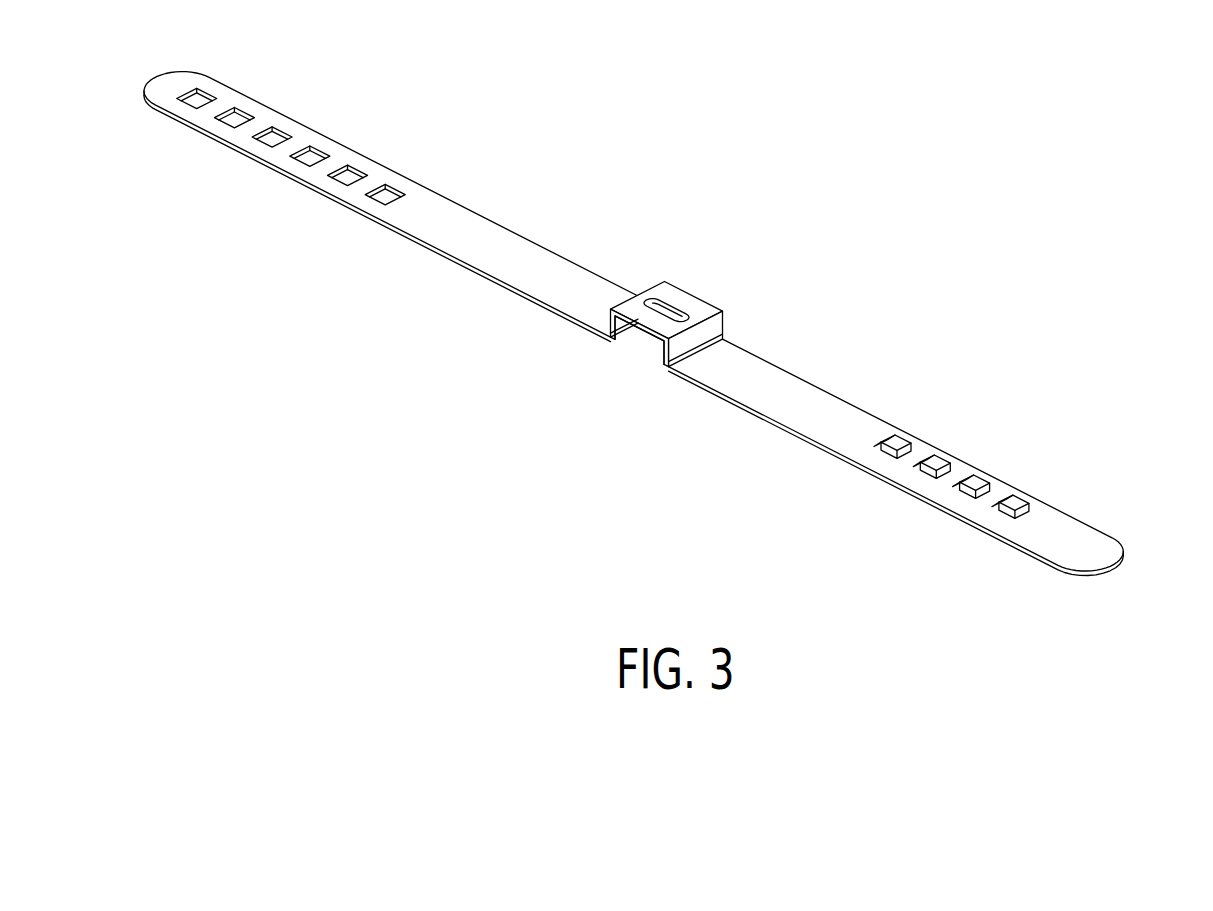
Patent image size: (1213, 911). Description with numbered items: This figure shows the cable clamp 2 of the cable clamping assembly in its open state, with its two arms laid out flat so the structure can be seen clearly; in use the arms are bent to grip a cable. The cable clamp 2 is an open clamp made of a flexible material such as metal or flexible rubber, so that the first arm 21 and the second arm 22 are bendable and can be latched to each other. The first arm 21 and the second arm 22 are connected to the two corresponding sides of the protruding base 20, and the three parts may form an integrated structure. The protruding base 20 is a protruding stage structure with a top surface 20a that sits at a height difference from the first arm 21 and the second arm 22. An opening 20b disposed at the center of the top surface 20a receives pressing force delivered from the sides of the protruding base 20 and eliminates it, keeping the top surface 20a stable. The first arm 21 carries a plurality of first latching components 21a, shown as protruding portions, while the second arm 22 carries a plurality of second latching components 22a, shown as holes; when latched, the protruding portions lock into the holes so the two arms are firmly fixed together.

The cable clamp 2 is at (1194, 53).
The protruding base 20 is at (722, 293).
The top surface 20a is at (682, 297).
The opening 20b is at (665, 292).
The first arm 21 is at (824, 408).
The first latching components 21a is at (942, 456).
The second arm 22 is at (494, 240).
The second latching components 22a is at (392, 188).